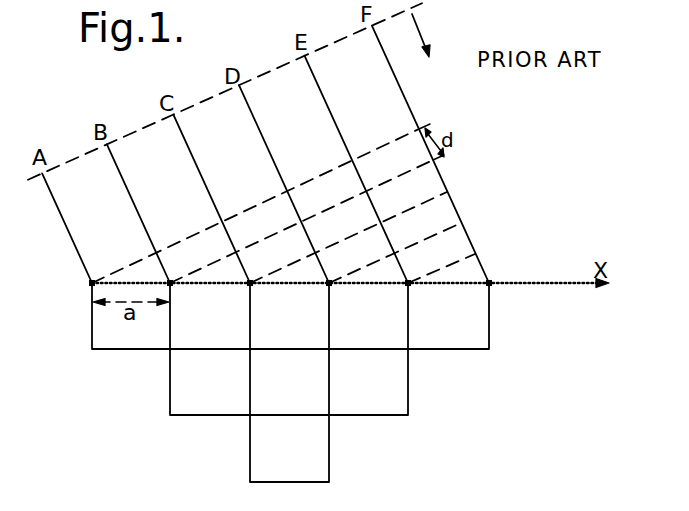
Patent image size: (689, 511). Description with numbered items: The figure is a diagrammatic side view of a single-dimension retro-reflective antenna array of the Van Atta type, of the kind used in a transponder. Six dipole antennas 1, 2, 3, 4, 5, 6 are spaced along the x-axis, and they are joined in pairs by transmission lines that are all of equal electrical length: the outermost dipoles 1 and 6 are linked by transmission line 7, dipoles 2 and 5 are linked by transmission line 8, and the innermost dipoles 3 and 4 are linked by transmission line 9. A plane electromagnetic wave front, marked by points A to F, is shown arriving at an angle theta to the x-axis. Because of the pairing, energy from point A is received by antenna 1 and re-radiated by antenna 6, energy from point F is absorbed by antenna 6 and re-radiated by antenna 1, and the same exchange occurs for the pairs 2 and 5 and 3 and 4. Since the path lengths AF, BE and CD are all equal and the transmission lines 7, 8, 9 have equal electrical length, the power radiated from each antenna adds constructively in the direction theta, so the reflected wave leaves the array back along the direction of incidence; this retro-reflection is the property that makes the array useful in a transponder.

The dipole antenna 1 is at (73, 229).
The dipole antenna 2 is at (146, 215).
The dipole antenna 3 is at (218, 200).
The dipole antenna 4 is at (291, 185).
The dipole antenna 5 is at (364, 171).
The dipole antenna 6 is at (438, 156).
The transmission line 7 is at (453, 349).
The transmission line 8 is at (400, 415).
The transmission line 9 is at (329, 463).